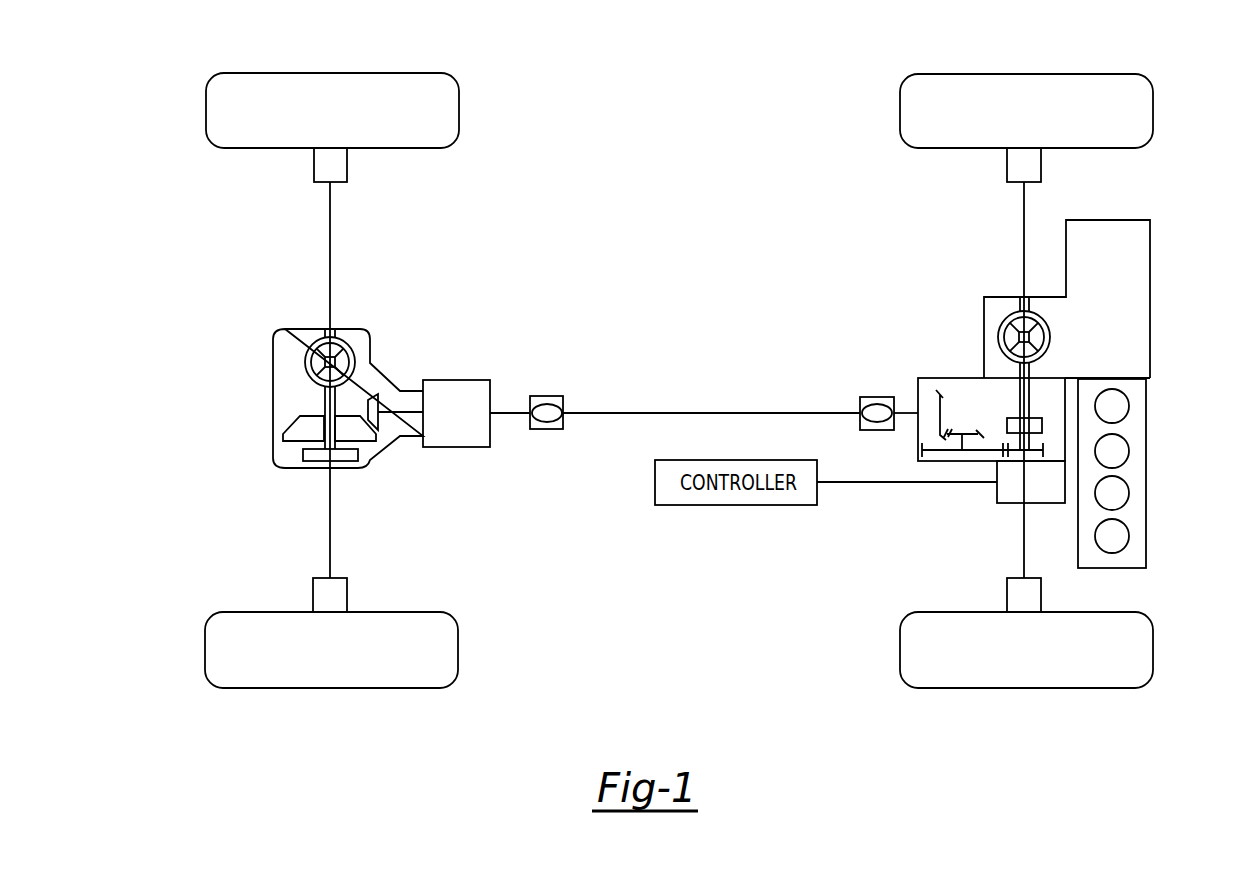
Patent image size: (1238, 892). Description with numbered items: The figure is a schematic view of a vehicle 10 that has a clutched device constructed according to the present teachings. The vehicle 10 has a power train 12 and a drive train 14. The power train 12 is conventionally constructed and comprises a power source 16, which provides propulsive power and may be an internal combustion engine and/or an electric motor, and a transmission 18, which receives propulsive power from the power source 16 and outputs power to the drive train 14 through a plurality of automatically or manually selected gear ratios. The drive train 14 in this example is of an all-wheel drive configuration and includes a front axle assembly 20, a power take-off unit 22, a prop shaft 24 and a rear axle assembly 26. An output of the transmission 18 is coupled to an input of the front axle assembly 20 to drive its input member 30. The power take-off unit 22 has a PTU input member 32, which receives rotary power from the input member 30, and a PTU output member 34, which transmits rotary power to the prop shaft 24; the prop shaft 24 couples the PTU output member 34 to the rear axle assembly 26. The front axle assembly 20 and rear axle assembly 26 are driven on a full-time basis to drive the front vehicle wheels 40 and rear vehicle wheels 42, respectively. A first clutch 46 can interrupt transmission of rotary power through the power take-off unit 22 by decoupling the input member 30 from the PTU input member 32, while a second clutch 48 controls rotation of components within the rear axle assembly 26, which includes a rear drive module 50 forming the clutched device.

The vehicle 10 is at (152, 730).
The power train 12 is at (1147, 480).
The drive train 14 is at (703, 350).
The power source 16 is at (1138, 562).
The transmission 18 is at (1142, 233).
The front axle assembly 20 is at (1039, 379).
The power take-off unit 22 is at (922, 345).
The prop shaft 24 is at (608, 412).
The rear axle assembly 26 is at (331, 413).
The input member 30 is at (1050, 340).
The PTU input member 32 is at (1012, 450).
The PTU output member 34 is at (904, 413).
The front vehicle wheels 40 is at (900, 112).
The rear vehicle wheels 42 is at (206, 112).
The first clutch 46 is at (1042, 425).
The second clutch 48 is at (313, 462).
The rear drive module 50 is at (275, 402).